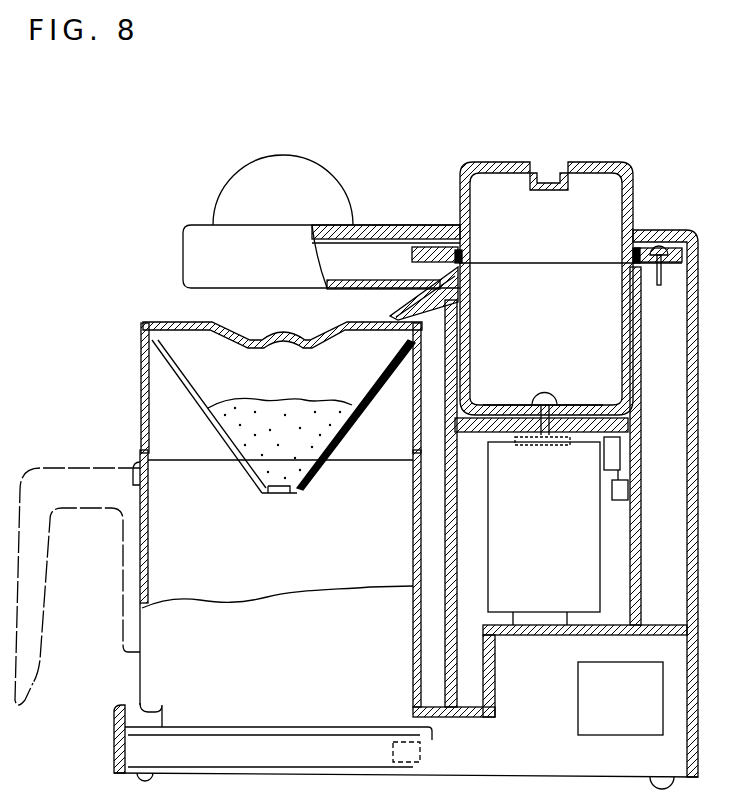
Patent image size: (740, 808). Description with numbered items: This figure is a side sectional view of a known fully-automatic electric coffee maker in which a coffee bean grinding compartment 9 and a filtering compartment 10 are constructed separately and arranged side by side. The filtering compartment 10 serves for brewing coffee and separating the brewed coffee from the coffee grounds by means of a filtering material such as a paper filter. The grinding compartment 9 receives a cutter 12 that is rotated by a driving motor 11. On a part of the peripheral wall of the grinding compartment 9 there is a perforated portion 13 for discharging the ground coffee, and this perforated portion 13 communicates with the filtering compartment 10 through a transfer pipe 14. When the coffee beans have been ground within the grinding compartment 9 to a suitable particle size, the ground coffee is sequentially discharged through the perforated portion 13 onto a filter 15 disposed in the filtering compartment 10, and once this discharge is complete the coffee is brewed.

The coffee bean grinding compartment 9 is at (543, 307).
The filtering compartment 10 is at (233, 372).
The driving motor 11 is at (588, 495).
The cutter 12 is at (582, 400).
The perforated portion 13 is at (478, 272).
The transfer pipe 14 is at (442, 293).
The filter 15 is at (374, 384).